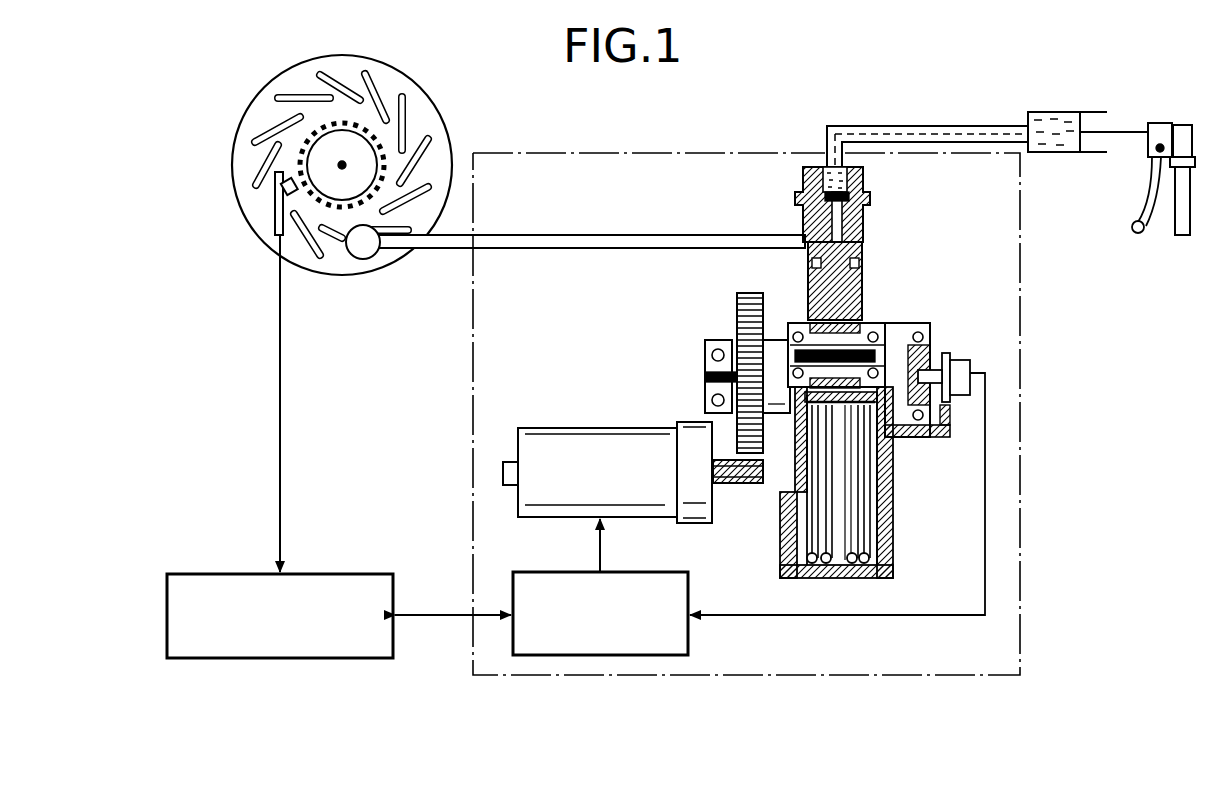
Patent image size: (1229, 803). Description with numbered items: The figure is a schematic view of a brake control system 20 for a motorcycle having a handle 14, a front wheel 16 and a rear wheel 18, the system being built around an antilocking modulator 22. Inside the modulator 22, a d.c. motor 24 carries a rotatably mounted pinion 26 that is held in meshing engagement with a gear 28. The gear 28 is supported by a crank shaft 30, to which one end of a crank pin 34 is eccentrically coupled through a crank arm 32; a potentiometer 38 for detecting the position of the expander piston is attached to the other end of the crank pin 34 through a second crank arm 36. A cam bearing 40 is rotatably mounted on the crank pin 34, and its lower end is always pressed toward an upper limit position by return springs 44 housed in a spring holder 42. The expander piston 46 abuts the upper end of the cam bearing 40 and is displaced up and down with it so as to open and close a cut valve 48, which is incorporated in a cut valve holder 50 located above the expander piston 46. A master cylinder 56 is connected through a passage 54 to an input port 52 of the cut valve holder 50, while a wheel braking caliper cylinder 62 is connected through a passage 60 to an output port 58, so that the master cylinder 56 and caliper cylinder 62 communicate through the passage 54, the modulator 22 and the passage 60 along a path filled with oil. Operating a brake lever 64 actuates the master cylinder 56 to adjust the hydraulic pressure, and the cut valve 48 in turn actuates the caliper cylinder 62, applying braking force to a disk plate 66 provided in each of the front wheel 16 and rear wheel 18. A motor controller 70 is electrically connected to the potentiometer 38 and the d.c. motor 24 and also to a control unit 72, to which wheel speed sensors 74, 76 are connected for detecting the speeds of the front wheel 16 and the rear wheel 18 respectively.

The handle 14 is at (1163, 118).
The front wheel 16 is at (379, 154).
The rear wheel 18 is at (372, 165).
The brake control system 20 is at (918, 67).
The antilocking modulator 22 is at (1027, 481).
The d.c. motor 24 is at (540, 440).
The pinion 26 is at (742, 485).
The gear 28 is at (737, 295).
The crank shaft 30 is at (705, 378).
The crank arm 32 is at (778, 340).
The crank pin 34 is at (900, 320).
The crank arm 36 is at (922, 320).
The potentiometer 38 is at (970, 363).
The cam bearing 40 is at (868, 305).
The spring holder 42 is at (870, 412).
The return springs 44 is at (862, 530).
The expander piston 46 is at (865, 270).
The cut valve 48 is at (870, 215).
The cut valve holder 50 is at (870, 195).
The input port 52 is at (871, 197).
The passage 54 is at (950, 126).
The master cylinder 56 is at (1050, 112).
The output port 58 is at (803, 235).
The passage 60 is at (560, 235).
The wheel braking caliper cylinder 62 is at (363, 260).
The brake lever 64 is at (1138, 235).
The disk plate 66 is at (433, 115).
The motor controller 70 is at (543, 572).
The control unit 72 is at (325, 574).
The wheel speed sensor 74 is at (226, 372).
The wheel speed sensor 76 is at (277, 196).